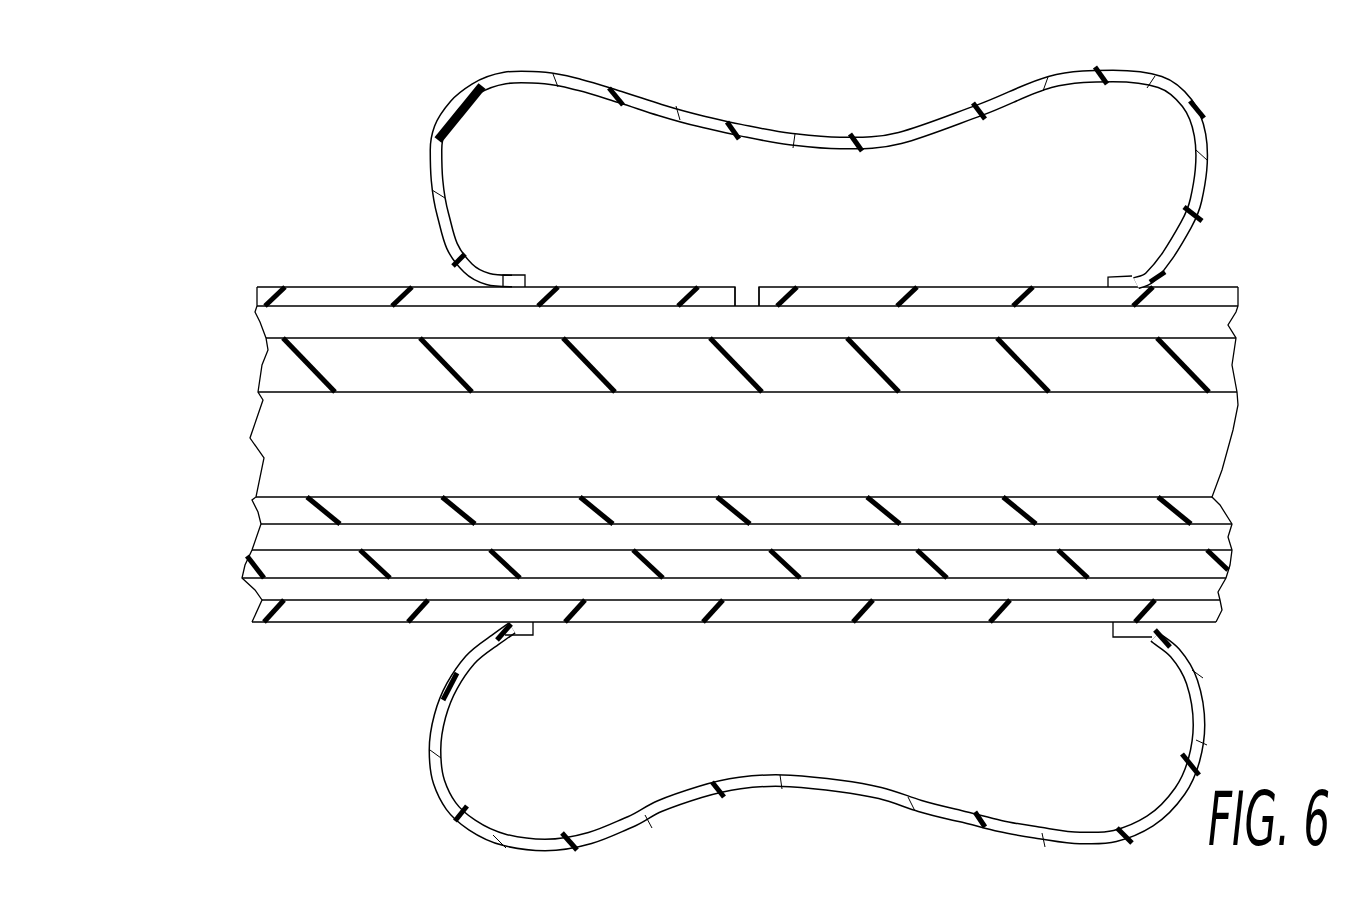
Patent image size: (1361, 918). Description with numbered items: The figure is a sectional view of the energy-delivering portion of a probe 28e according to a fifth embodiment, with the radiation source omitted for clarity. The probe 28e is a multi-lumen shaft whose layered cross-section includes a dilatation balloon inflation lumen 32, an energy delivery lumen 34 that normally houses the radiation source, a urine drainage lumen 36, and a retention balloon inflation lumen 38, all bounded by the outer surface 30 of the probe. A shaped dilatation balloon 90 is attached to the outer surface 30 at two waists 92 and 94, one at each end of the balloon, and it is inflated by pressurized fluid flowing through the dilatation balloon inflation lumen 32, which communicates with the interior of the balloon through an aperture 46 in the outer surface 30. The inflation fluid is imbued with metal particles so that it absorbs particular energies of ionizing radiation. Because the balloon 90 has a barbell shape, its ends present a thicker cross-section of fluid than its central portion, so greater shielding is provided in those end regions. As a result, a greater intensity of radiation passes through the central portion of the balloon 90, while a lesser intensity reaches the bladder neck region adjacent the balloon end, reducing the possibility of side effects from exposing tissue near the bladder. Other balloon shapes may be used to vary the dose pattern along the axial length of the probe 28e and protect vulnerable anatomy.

The probe 28e is at (271, 282).
The outer surface 30 is at (395, 289).
The dilatation balloon inflation lumen 32 is at (338, 318).
The energy delivery lumen 34 is at (260, 424).
The urine drainage lumen 36 is at (260, 538).
The retention balloon inflation lumen 38 is at (254, 590).
The aperture 46 is at (748, 290).
The shaped dilatation balloon 90 is at (728, 122).
The waist 92 is at (498, 280).
The waist 94 is at (1140, 278).